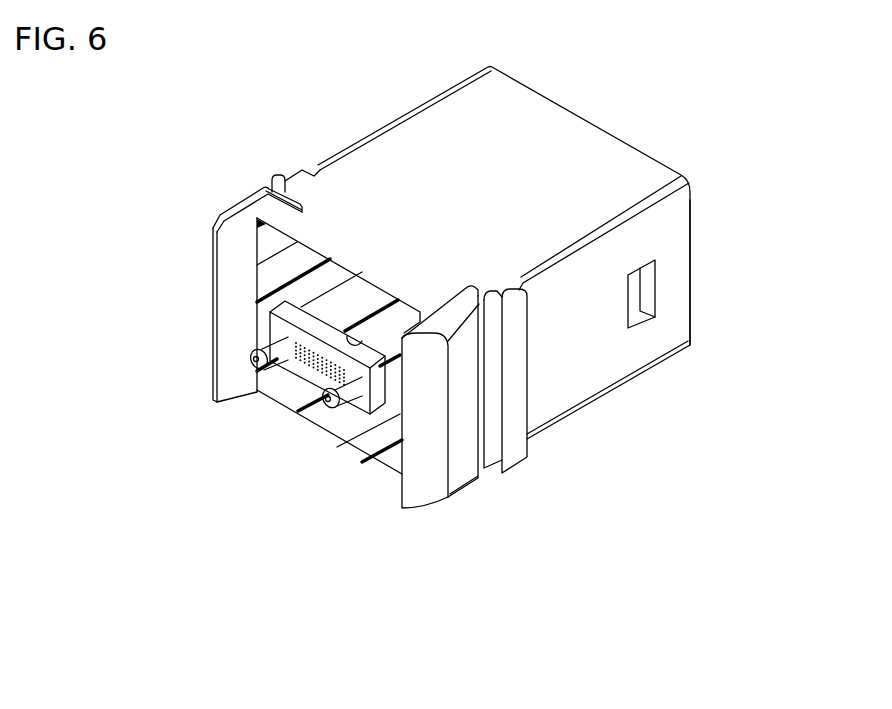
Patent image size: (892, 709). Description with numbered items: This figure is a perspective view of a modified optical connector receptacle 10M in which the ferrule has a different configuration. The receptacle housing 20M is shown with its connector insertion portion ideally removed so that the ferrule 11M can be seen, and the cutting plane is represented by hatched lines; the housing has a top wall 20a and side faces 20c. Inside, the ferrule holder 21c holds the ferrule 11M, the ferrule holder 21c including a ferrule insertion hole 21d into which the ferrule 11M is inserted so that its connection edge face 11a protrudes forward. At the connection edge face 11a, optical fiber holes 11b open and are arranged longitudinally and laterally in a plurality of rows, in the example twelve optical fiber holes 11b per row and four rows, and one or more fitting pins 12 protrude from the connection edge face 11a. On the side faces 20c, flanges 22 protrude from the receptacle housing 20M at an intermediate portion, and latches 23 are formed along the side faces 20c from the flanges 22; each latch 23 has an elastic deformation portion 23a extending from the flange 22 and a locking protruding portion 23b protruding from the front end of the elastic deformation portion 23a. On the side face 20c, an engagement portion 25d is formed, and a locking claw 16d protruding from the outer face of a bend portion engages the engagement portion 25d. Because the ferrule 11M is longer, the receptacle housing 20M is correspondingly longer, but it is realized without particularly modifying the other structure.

The optical connector receptacle 10M is at (586, 97).
The receptacle housing 20M is at (642, 392).
The top wall of housing 20a is at (430, 138).
The side face 20c is at (583, 383).
The locking claw 16d is at (640, 283).
The engagement portion 25d is at (650, 290).
The ferrule holder 21c is at (337, 317).
The ferrule insertion hole 21d is at (365, 327).
The flange 22 is at (284, 175).
The latch 23 is at (245, 118).
The elastic deformation portion 23a is at (277, 178).
The locking protruding portion 23b is at (230, 210).
The ferrule 11M is at (333, 440).
The connection edge face 11a is at (297, 360).
The optical fiber hole 11b is at (312, 362).
The fitting pin 12 is at (258, 357).